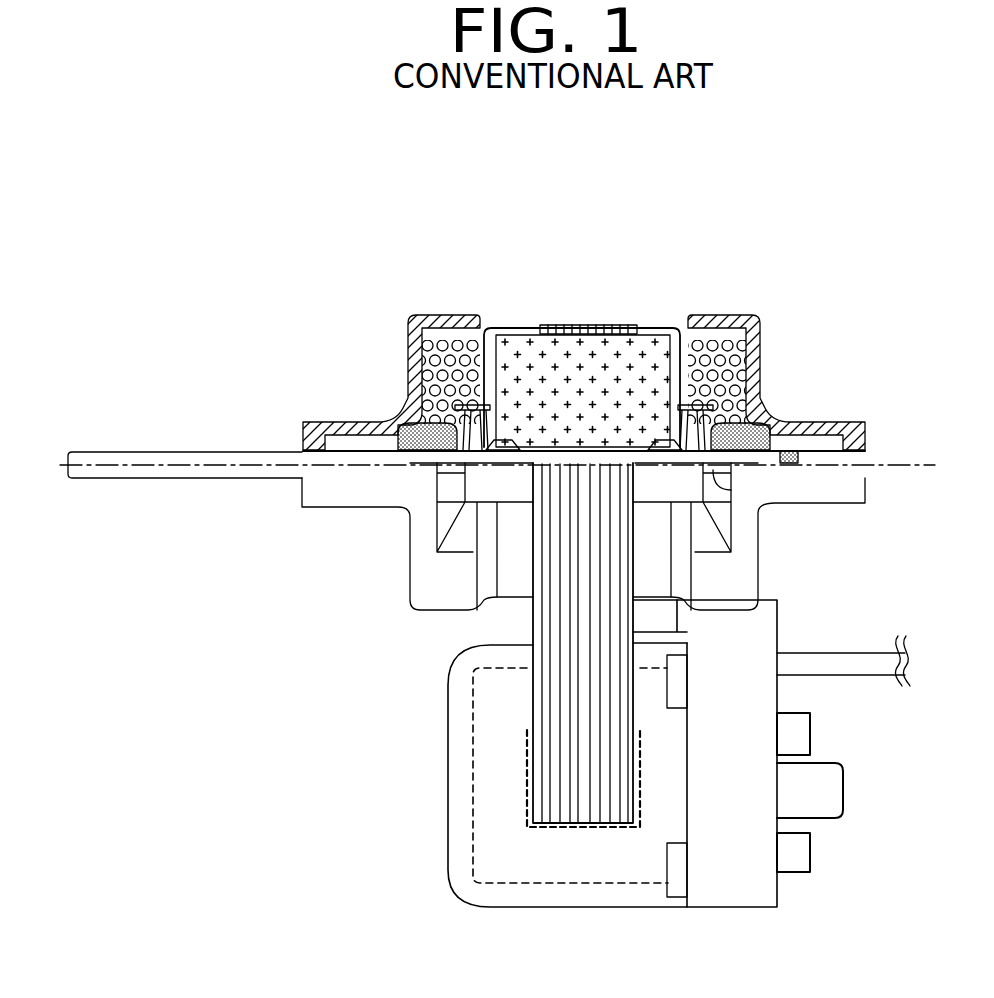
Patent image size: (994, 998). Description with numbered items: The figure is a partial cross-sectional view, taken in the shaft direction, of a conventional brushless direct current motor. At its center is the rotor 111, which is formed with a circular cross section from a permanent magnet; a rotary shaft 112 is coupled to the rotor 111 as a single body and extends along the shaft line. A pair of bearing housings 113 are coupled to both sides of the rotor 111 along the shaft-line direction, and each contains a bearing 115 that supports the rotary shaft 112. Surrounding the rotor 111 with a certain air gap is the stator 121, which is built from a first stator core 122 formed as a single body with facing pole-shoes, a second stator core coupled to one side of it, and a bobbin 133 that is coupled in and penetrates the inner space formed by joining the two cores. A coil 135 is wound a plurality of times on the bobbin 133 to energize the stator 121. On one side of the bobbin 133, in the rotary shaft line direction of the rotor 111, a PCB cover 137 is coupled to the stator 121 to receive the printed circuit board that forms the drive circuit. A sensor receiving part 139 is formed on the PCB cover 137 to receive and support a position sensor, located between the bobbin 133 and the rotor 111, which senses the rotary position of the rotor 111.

The rotor 111 is at (522, 333).
The rotary shaft 112 is at (125, 480).
The bearing housing 113 is at (408, 352).
The bearing 115 is at (390, 437).
The stator 121 is at (590, 362).
The first stator core 122 is at (548, 700).
The bobbin 133 is at (457, 788).
The coil 135 is at (472, 748).
The PCB cover 137 is at (757, 887).
The sensor receiving part 139 is at (662, 637).